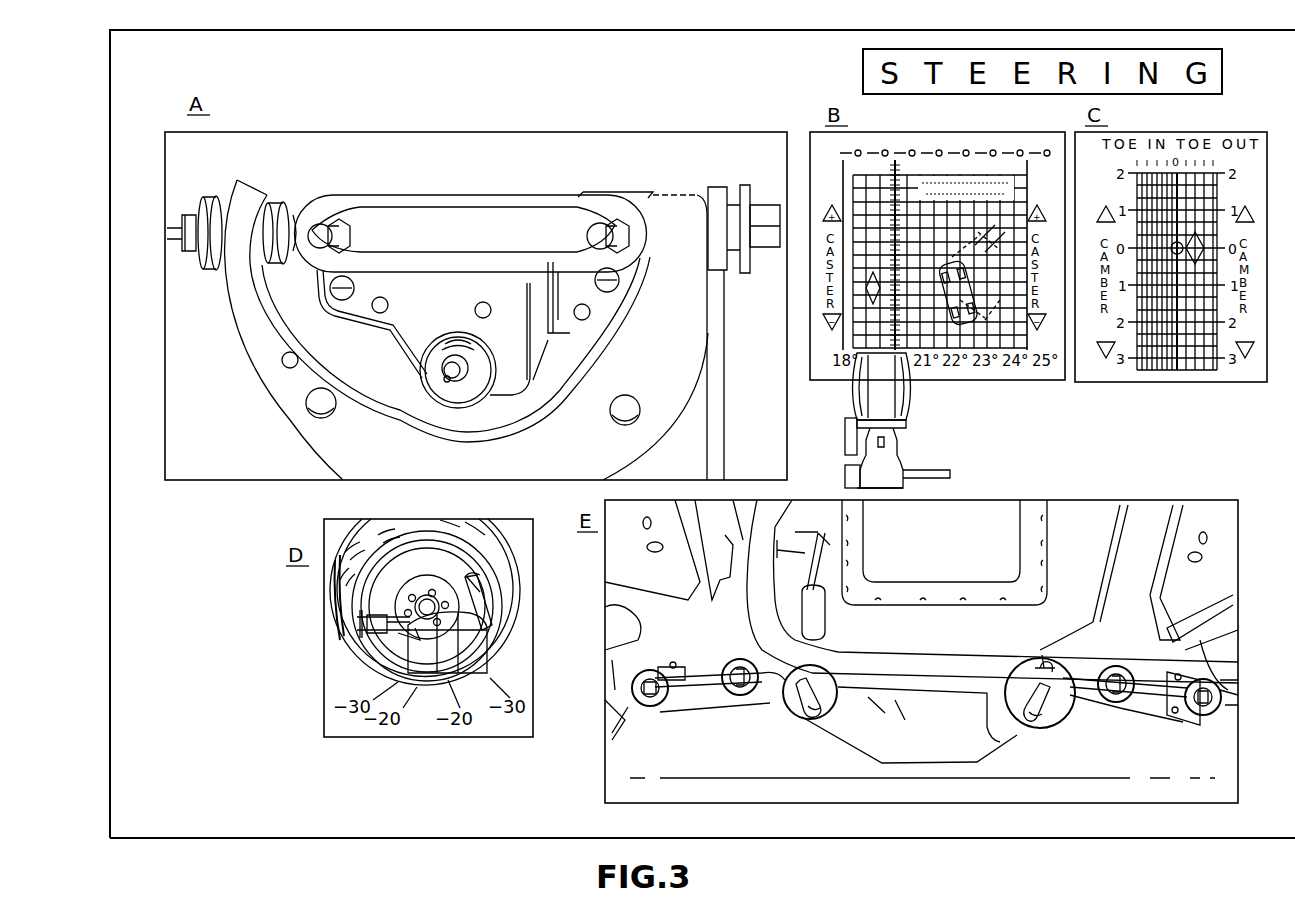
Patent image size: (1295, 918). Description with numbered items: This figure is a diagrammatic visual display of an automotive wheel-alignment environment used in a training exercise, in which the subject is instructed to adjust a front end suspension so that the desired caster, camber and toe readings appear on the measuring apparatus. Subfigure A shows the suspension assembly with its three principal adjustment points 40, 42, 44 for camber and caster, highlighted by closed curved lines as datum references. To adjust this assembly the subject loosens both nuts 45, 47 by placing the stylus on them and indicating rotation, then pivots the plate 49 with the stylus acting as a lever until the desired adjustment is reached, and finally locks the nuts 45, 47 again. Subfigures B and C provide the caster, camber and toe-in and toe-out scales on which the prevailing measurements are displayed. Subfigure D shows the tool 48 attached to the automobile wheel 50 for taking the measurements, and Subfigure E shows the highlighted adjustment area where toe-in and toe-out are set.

The adjustment point 40 is at (388, 300).
The adjustment point 42 is at (477, 304).
The adjustment point 44 is at (592, 312).
The nut 45 is at (345, 226).
The nut 47 is at (614, 240).
The plate 49 is at (518, 392).
The tool 48 is at (427, 662).
The automobile wheel 50 is at (363, 605).